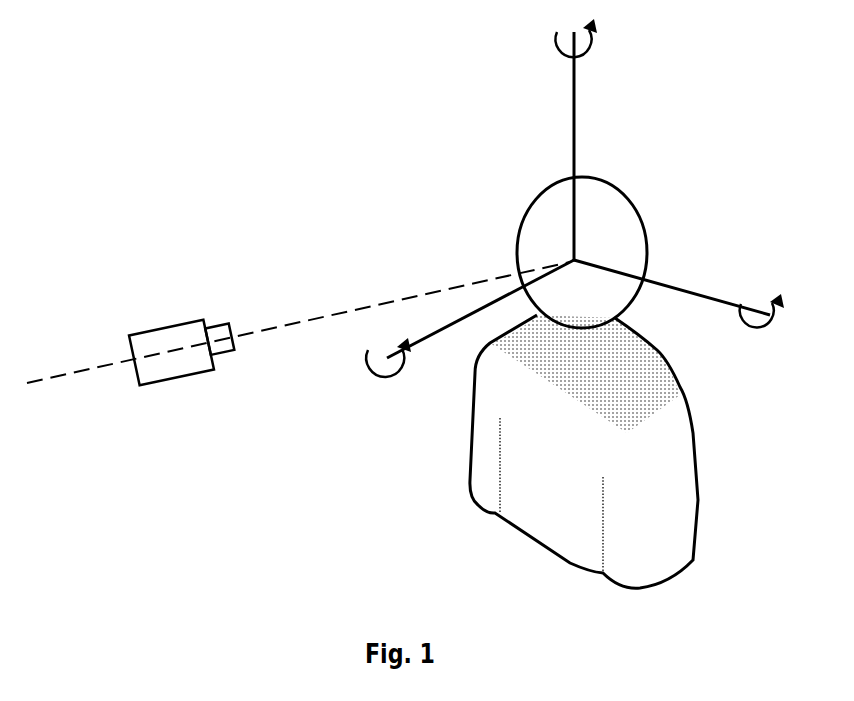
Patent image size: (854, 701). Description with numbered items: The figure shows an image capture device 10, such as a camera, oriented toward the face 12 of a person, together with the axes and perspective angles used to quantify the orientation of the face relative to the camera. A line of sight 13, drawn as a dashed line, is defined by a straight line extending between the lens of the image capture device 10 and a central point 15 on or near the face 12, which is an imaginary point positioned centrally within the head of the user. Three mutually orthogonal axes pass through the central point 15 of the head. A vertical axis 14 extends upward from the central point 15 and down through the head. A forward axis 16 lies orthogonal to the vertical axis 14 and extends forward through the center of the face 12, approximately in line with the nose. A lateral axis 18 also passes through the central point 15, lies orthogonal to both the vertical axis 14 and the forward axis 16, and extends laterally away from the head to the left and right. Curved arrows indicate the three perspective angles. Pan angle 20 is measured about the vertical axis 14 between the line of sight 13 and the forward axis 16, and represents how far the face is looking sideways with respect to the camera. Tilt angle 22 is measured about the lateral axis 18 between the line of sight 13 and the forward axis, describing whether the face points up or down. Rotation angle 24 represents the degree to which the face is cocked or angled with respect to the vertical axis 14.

The image capture device 10 is at (158, 328).
The face 12 is at (545, 230).
The line of sight 13 is at (382, 305).
The vertical axis 14 is at (574, 108).
The central point 15 is at (602, 247).
The forward axis 16 is at (472, 315).
The lateral axis 18 is at (683, 290).
The pan angle 20 is at (592, 39).
The tilt angle 22 is at (764, 330).
The rotation angle 24 is at (388, 370).